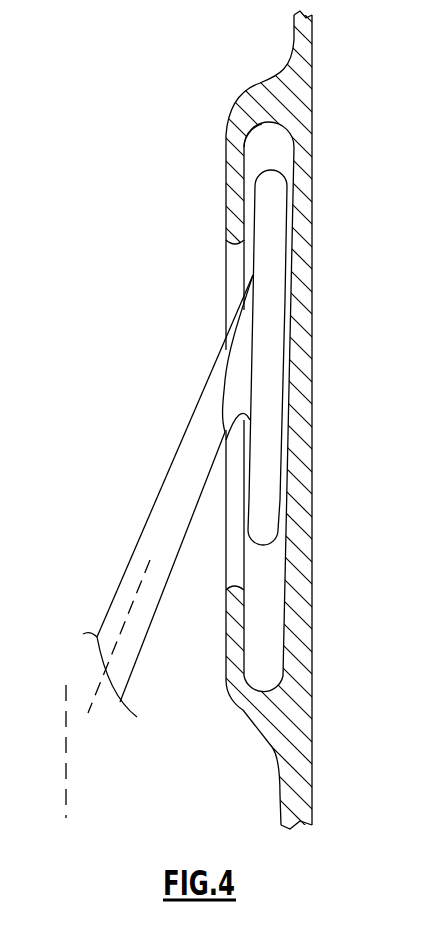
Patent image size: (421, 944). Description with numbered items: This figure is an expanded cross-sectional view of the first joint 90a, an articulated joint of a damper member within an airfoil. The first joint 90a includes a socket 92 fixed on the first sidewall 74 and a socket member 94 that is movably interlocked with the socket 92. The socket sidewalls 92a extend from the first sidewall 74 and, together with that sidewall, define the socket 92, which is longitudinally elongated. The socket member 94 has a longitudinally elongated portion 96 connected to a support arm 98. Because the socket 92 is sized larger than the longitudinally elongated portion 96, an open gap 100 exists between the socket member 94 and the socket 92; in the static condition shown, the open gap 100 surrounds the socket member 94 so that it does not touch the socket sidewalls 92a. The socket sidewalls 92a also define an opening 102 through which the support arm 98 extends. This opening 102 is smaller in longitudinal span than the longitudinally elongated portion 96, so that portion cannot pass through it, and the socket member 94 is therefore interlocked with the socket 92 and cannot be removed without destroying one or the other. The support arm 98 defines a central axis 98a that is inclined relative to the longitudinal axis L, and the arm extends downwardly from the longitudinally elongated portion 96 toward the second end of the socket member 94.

The first sidewall 74 is at (312, 320).
The socket 92 is at (280, 138).
The socket sidewalls 92a is at (246, 155).
The socket member 94 is at (297, 288).
The longitudinally elongated portion 96 is at (272, 393).
The open gap 100 is at (282, 510).
The opening 102 is at (229, 259).
The first joint 90a is at (183, 340).
The support arm 98 is at (146, 553).
The central axis 98a is at (100, 690).
The longitudinal axis L is at (66, 762).